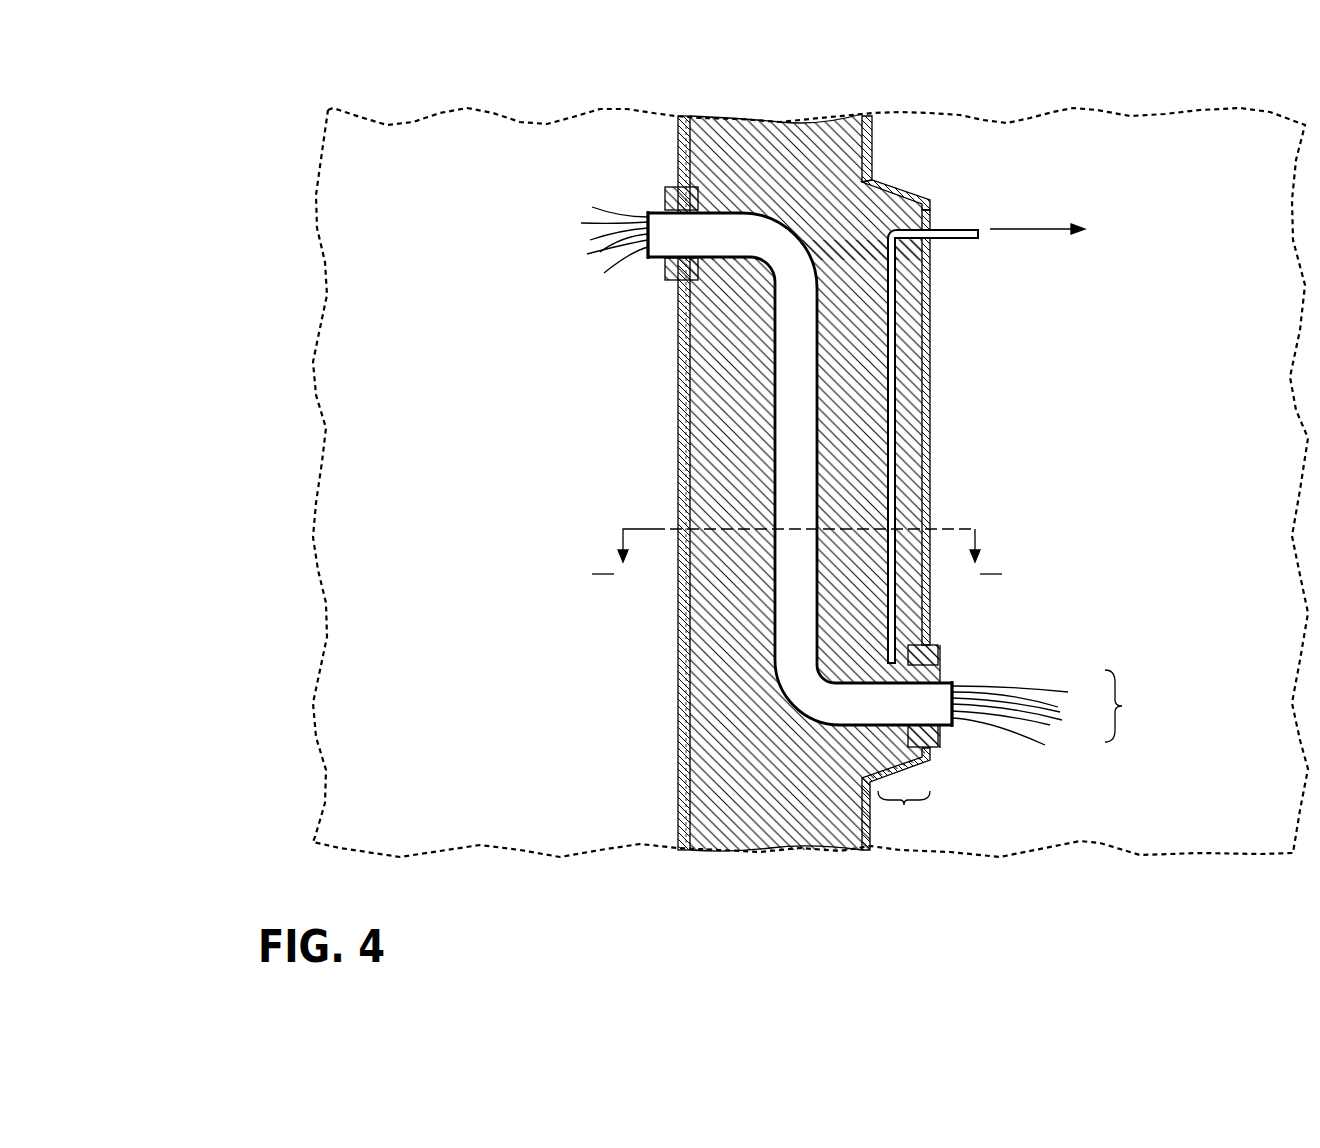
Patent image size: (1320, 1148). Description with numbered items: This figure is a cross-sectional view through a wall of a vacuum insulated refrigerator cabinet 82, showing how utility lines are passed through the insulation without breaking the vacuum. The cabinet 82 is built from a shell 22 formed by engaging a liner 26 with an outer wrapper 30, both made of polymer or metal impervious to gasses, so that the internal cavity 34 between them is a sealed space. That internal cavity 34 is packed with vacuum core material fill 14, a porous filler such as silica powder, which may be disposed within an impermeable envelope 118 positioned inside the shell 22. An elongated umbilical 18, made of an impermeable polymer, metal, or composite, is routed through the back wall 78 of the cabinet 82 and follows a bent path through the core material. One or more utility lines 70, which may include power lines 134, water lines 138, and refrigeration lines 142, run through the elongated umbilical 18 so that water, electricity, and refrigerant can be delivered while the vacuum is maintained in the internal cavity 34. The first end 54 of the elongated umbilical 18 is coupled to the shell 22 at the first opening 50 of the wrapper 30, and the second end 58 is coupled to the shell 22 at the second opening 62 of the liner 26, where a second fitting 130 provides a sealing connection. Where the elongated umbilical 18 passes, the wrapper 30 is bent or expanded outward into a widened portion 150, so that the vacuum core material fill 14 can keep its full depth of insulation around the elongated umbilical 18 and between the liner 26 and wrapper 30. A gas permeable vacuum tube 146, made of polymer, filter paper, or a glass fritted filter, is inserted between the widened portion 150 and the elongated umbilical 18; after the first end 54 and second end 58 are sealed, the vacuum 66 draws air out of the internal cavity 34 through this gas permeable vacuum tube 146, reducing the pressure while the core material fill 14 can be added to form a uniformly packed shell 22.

The shell 22 is at (738, 110).
The internal cavity 34 is at (808, 135).
The back wall 78 is at (872, 152).
The cabinet 82 is at (940, 196).
The gas permeable vacuum tube 146 is at (962, 230).
The vacuum 66 is at (1054, 229).
The vacuum core material fill 14 is at (865, 322).
The wrapper 30 is at (931, 330).
The impermeable envelope 118 is at (932, 440).
The liner 26 is at (678, 448).
The elongated umbilical 18 is at (792, 650).
The second fitting 130 is at (670, 187).
The second end 58 is at (662, 207).
The second opening 62 is at (645, 262).
The refrigeration lines 142 is at (592, 207).
The water lines 138 is at (580, 223).
The power lines 134 is at (603, 273).
The utility lines 70 is at (1051, 707).
The first opening 50 is at (955, 727).
The first end 54 is at (947, 732).
The widened portion 150 is at (896, 799).